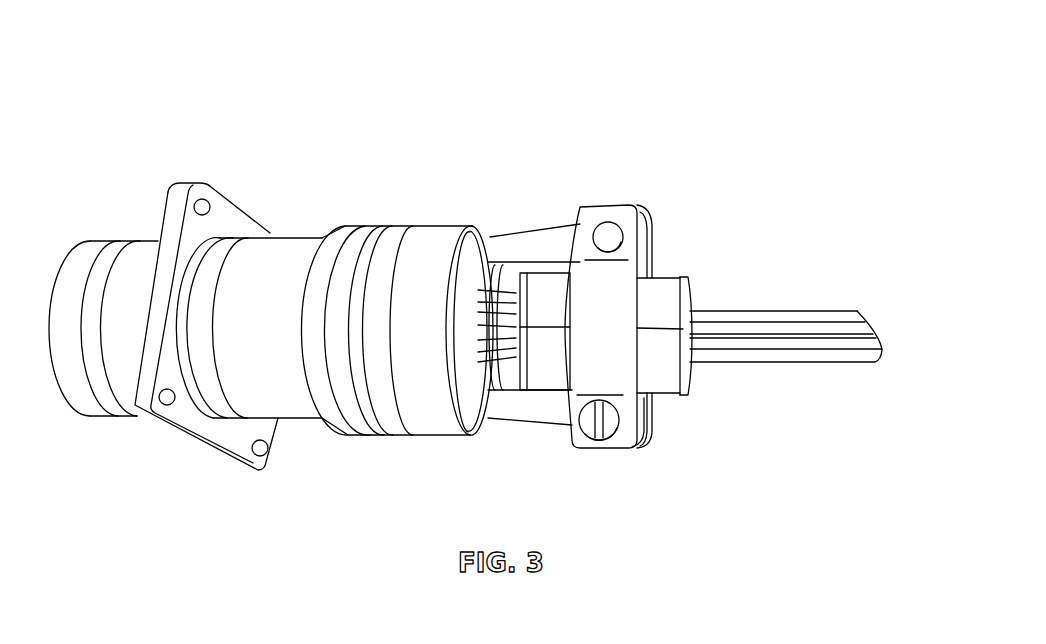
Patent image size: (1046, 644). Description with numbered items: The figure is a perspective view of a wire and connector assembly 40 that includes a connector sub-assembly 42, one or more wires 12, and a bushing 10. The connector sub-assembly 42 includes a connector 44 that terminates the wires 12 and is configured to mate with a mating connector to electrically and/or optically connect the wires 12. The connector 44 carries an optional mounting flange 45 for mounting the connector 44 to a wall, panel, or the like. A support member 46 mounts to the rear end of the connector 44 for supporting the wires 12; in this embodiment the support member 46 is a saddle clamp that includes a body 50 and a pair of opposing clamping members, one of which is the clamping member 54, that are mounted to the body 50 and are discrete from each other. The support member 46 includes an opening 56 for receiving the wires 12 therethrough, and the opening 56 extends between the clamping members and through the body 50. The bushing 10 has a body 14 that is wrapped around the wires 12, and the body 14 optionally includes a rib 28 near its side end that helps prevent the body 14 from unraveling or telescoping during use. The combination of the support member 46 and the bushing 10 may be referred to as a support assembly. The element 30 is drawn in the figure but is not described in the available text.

The bushing 10 is at (648, 335).
The wires 12 is at (762, 310).
The body 14 is at (658, 378).
The rib 28 is at (693, 378).
The nut flange 30 is at (693, 282).
The wire and connector assembly 40 is at (680, 113).
The connector sub-assembly 42 is at (407, 443).
The connector 44 is at (273, 283).
The mounting flange 45 is at (195, 233).
The support member 46 is at (508, 250).
The body 50 is at (530, 412).
The clamping member 54 is at (640, 437).
The opening 56 is at (547, 300).